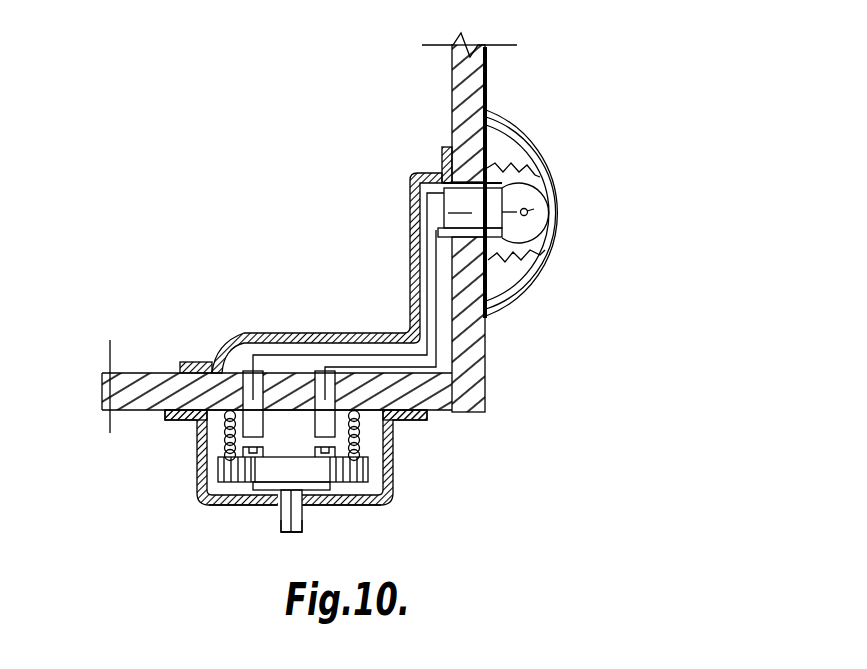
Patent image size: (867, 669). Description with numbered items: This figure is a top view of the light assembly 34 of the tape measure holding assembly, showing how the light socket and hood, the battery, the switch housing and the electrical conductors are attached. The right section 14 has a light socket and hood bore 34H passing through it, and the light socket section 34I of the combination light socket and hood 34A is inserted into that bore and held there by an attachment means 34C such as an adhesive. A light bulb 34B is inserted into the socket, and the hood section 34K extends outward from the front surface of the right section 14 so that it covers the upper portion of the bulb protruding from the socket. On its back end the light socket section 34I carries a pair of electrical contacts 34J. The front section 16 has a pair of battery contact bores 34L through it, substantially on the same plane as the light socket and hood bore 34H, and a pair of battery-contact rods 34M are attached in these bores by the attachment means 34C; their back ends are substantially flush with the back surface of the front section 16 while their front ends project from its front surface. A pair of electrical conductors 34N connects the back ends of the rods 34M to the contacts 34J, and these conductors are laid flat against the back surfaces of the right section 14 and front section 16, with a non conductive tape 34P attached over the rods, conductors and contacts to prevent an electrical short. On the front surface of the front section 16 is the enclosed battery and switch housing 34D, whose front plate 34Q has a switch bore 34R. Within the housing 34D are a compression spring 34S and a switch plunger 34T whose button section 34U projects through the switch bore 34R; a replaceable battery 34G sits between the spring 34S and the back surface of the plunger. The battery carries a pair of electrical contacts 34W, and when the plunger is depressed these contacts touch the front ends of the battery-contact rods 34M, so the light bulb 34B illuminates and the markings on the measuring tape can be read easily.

The right section 14 is at (478, 92).
The front section 16 is at (160, 370).
The light assembly 34 is at (586, 97).
The light socket and hood 34A is at (540, 177).
The light bulb 34B is at (548, 219).
The attachment means 34C is at (535, 168).
The battery and switch housing 34D is at (393, 478).
The battery 34G is at (223, 503).
The light socket and hood bore 34H is at (545, 251).
The light socket section 34I is at (528, 260).
The electrical contacts 34J is at (440, 188).
The hood section 34K is at (503, 145).
The battery contact bores 34L is at (110, 382).
The battery-contact rods 34M is at (165, 413).
The electrical conductors 34N is at (438, 318).
The non conductive tape 34P is at (410, 279).
The front plate 34Q is at (228, 502).
The switch bore 34R is at (281, 509).
The compression spring 34S is at (200, 444).
The switch plunger 34T is at (303, 522).
The button section 34U is at (303, 522).
The battery electrical contacts 34W is at (250, 462).